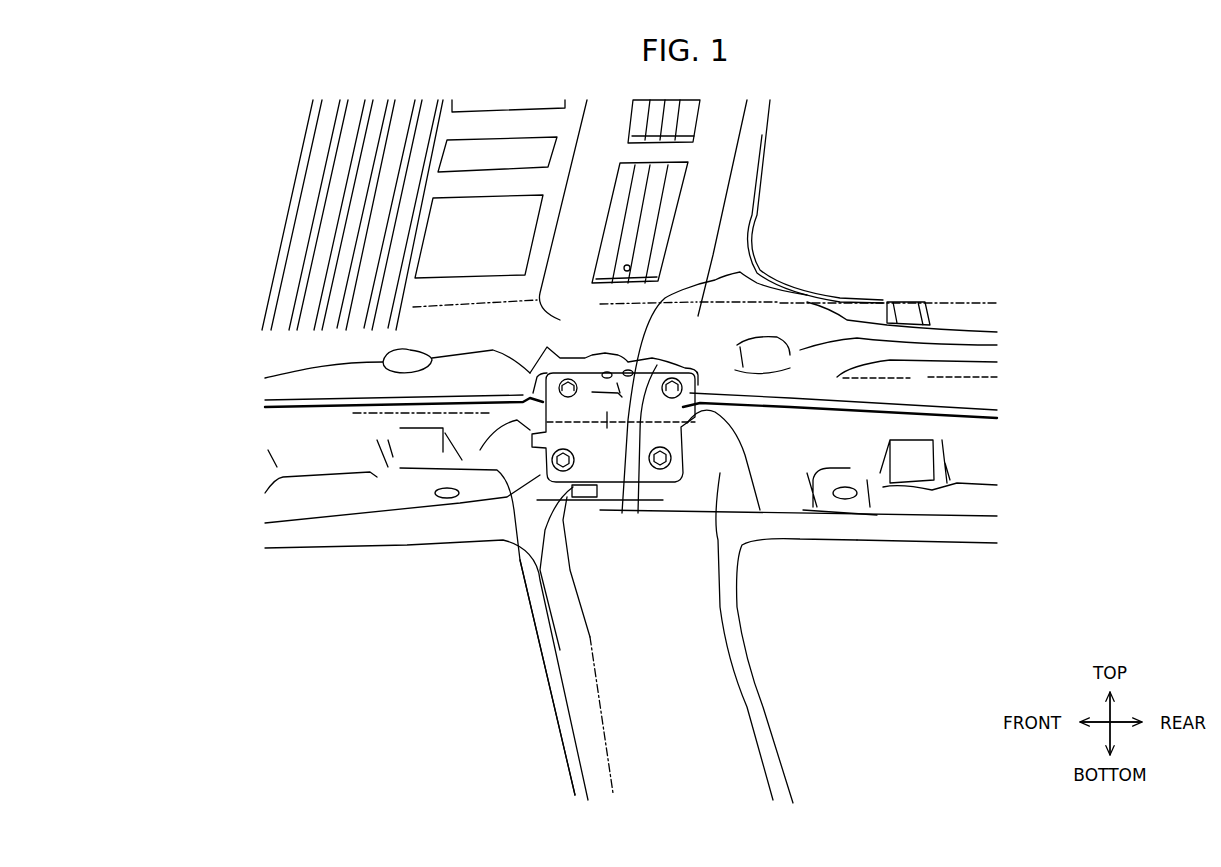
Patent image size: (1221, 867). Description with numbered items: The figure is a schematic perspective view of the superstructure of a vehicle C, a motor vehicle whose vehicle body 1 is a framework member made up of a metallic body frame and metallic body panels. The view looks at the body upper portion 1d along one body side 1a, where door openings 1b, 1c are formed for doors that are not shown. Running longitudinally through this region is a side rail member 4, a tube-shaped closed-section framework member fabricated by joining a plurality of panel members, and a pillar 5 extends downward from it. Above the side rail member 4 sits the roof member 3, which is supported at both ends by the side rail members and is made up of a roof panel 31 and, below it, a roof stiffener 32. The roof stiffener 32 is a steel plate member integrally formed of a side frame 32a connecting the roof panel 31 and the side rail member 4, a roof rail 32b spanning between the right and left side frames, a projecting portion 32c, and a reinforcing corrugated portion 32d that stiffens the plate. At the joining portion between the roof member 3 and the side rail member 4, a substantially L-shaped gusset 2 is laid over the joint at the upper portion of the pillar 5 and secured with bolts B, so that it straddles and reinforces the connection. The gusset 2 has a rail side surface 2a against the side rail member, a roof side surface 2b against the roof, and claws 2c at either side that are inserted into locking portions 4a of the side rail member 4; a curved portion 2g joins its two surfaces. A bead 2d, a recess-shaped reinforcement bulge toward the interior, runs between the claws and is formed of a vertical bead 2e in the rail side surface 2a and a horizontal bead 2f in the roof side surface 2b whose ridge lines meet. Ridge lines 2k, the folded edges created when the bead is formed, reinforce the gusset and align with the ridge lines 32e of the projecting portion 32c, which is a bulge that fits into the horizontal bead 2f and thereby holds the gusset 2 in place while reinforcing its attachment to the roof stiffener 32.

The vehicle body 1 is at (222, 143).
The body side 1a is at (847, 738).
The door opening 1b is at (580, 785).
The door opening 1c is at (765, 712).
The body upper portion 1d is at (265, 565).
The gusset 2 is at (547, 484).
The rail side surface 2a is at (543, 560).
The roof side surface 2b is at (535, 395).
The claw 2c is at (527, 432).
The bead 2d is at (808, 258).
The vertical bead 2e is at (625, 435).
The horizontal bead 2f is at (657, 365).
The curved portion 2g is at (638, 513).
The ridge line 2k is at (555, 620).
The roof member 3 is at (882, 236).
The roof panel 31 is at (753, 138).
The roof stiffener 32 is at (777, 117).
The side frame 32a is at (977, 307).
The roof rail 32b is at (764, 157).
The projecting portion 32c is at (757, 272).
The reinforcing corrugated portion 32d is at (402, 178).
The ridge line 32e is at (597, 358).
The side rail member 4 is at (855, 519).
The locking portion 4a is at (453, 500).
The pillar 5 is at (555, 675).
The bolt B is at (730, 573).
The vehicle C is at (1034, 144).